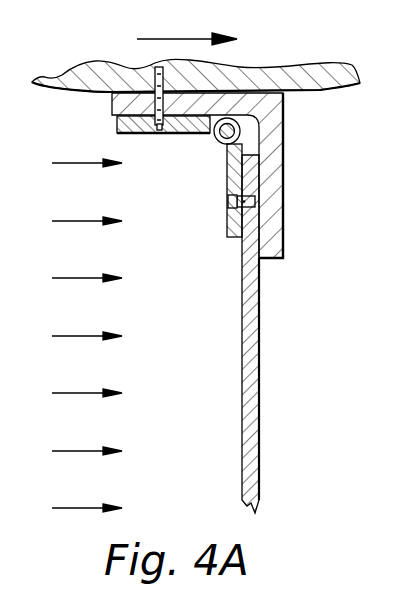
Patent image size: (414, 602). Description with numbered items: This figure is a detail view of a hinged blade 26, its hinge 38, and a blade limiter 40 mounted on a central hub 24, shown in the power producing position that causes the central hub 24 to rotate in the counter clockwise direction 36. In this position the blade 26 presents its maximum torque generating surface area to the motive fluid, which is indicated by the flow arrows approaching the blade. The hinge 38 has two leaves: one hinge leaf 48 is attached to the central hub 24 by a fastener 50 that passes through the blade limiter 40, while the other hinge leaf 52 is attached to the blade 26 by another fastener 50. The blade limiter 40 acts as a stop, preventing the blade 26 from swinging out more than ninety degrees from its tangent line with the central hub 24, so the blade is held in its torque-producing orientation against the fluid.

The central hub 24 is at (352, 78).
The counter clockwise direction 36 is at (157, 38).
The blade limiter 40 is at (284, 162).
The hinge leaf 48 is at (116, 123).
The fastener 50 is at (162, 134).
The hinge 38 is at (215, 144).
The hinge leaf 52 is at (228, 238).
The blade 26 is at (242, 314).